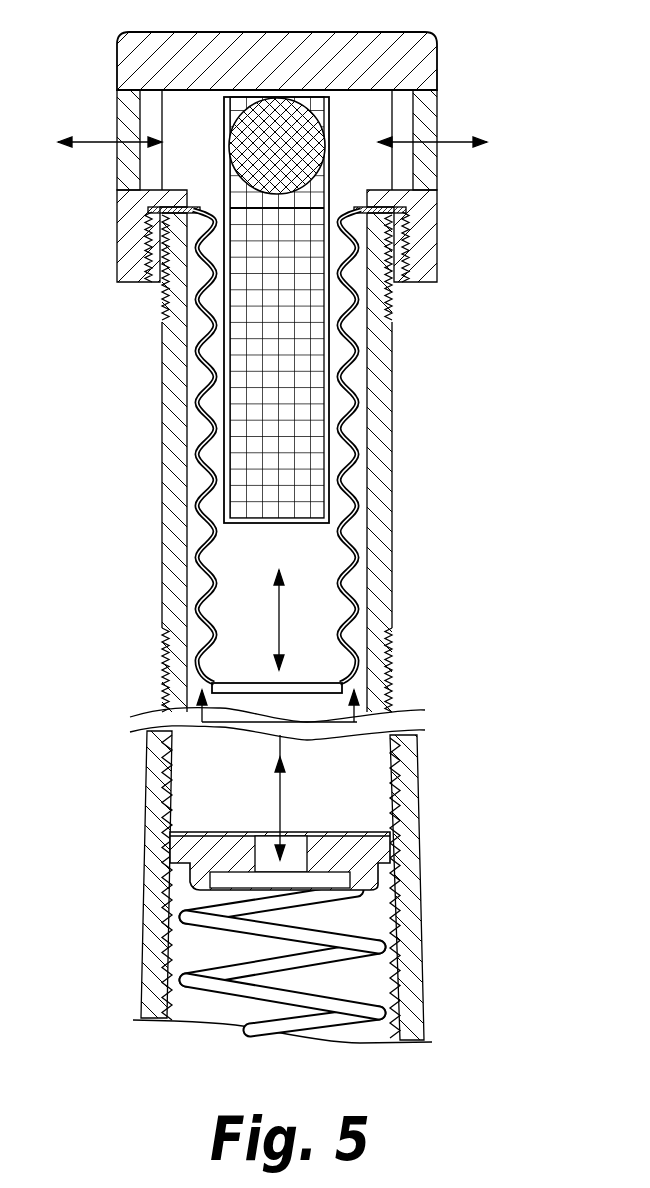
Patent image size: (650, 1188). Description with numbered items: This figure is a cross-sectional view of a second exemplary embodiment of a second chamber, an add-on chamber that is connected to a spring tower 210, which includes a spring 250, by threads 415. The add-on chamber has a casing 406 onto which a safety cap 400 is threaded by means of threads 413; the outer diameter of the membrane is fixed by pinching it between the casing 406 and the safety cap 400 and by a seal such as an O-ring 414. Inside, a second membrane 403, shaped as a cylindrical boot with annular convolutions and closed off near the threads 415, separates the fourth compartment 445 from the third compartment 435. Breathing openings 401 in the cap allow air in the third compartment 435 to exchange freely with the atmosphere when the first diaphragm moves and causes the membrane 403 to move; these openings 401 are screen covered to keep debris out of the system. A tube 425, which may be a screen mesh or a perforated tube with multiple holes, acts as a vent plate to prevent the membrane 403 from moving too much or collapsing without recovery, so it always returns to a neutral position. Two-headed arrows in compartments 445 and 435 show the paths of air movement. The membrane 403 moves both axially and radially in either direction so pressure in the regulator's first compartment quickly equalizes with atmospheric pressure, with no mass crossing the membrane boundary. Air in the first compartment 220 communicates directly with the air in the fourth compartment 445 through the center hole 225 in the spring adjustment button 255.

The safety cap 400 is at (118, 68).
The screened vents 401 is at (232, 148).
The threads 413 is at (398, 250).
The O-ring 414 is at (150, 208).
The tube 425 is at (265, 322).
The third compartment 435 is at (305, 555).
The casing 406 is at (167, 443).
The second membrane 403 is at (203, 557).
The fourth compartment 445 is at (362, 532).
The threads 415 is at (390, 650).
The spring tower 210 is at (413, 800).
The center hole 225 is at (293, 840).
The spring adjustment button 255 is at (180, 845).
The spring 250 is at (183, 917).
The first compartment 220 is at (377, 915).